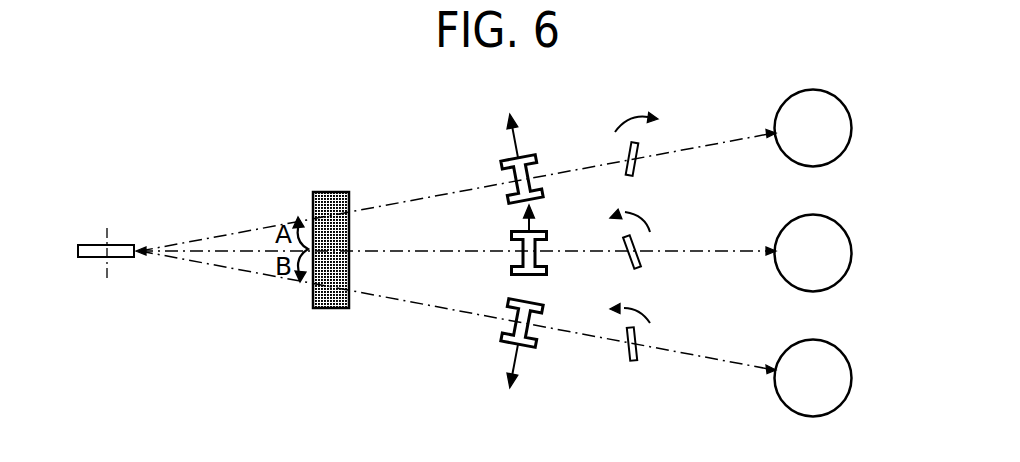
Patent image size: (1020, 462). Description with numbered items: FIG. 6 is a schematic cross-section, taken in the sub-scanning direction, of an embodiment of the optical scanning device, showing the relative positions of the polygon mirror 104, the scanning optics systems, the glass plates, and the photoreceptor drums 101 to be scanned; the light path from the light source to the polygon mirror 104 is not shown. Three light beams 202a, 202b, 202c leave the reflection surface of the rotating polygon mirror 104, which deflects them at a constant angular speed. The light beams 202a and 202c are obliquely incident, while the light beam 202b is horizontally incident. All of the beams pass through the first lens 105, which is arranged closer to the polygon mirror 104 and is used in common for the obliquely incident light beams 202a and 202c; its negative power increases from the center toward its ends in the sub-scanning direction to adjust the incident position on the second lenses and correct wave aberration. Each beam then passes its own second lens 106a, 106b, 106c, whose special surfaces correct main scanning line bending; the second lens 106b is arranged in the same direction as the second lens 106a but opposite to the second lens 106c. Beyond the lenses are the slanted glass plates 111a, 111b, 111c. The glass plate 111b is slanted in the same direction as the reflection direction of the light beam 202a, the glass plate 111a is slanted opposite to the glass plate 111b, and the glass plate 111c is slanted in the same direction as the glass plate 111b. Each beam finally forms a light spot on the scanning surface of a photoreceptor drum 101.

The photoreceptor drum 101 is at (849, 128).
The polygon mirror 104 is at (121, 245).
The first lens 105 is at (335, 191).
The second lens 106a is at (529, 158).
The second lens 106b is at (546, 232).
The second lens 106c is at (530, 347).
The glass plate 111a is at (640, 168).
The glass plate 111b is at (641, 262).
The glass plate 111c is at (638, 356).
The light beam 202a is at (408, 198).
The light beam 202b is at (449, 248).
The light beam 202c is at (414, 306).